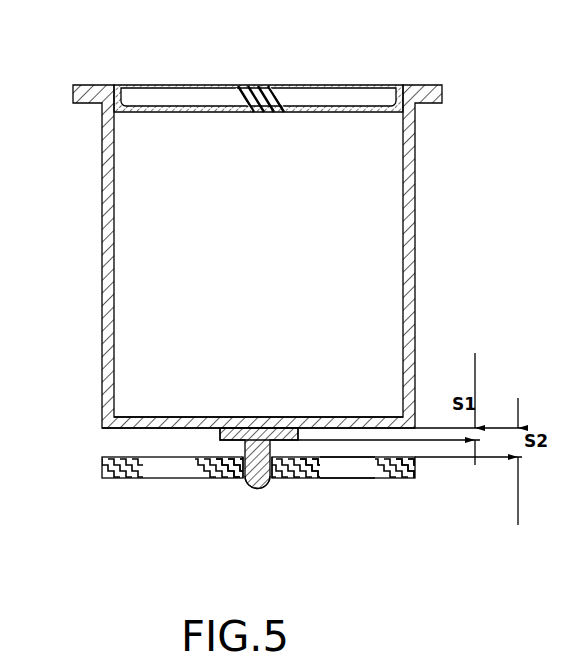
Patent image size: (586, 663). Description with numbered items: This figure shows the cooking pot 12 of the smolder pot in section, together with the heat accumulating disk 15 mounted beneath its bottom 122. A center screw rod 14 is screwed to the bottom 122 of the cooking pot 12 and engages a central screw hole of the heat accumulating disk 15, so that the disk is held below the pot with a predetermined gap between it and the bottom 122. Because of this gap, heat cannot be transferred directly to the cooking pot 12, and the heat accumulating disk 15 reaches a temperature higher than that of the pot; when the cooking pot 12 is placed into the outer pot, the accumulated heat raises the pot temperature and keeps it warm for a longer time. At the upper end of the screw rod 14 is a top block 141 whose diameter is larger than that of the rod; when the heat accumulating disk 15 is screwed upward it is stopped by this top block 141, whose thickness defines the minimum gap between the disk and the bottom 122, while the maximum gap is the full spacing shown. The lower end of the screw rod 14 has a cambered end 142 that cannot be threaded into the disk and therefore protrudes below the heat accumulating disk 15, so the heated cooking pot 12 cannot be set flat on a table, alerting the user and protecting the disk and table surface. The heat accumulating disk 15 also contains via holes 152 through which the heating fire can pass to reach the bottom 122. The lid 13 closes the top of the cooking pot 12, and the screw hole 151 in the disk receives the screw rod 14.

The cooking pot 12 is at (415, 281).
The bottom 122 is at (136, 417).
The lid 13 is at (351, 109).
The center screw rod 14 is at (269, 450).
The top block 141 is at (257, 427).
The cambered end 142 is at (257, 483).
The heat accumulating disk 15 is at (102, 462).
The hole of base plate 151 is at (245, 476).
The via hole 152 is at (347, 473).